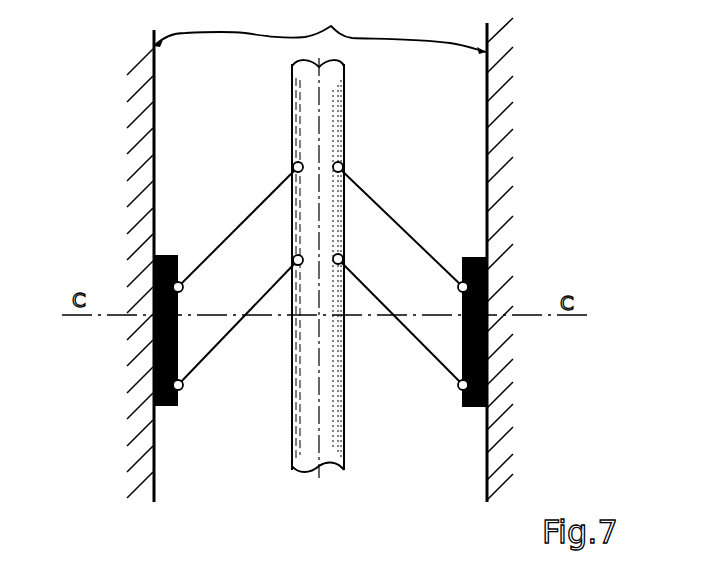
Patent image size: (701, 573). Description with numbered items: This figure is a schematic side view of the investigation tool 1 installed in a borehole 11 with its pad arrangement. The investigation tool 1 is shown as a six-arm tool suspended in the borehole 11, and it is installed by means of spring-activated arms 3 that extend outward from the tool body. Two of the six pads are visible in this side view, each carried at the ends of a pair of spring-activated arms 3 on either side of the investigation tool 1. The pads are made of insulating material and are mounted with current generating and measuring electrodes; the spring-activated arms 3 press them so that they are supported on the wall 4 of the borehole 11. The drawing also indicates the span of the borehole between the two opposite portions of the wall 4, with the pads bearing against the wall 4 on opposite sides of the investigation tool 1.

The investigation tool 1 is at (324, 99).
The spring-activated arms 3 is at (224, 240).
The wall 4 is at (320, 28).
The borehole 11 is at (384, 445).